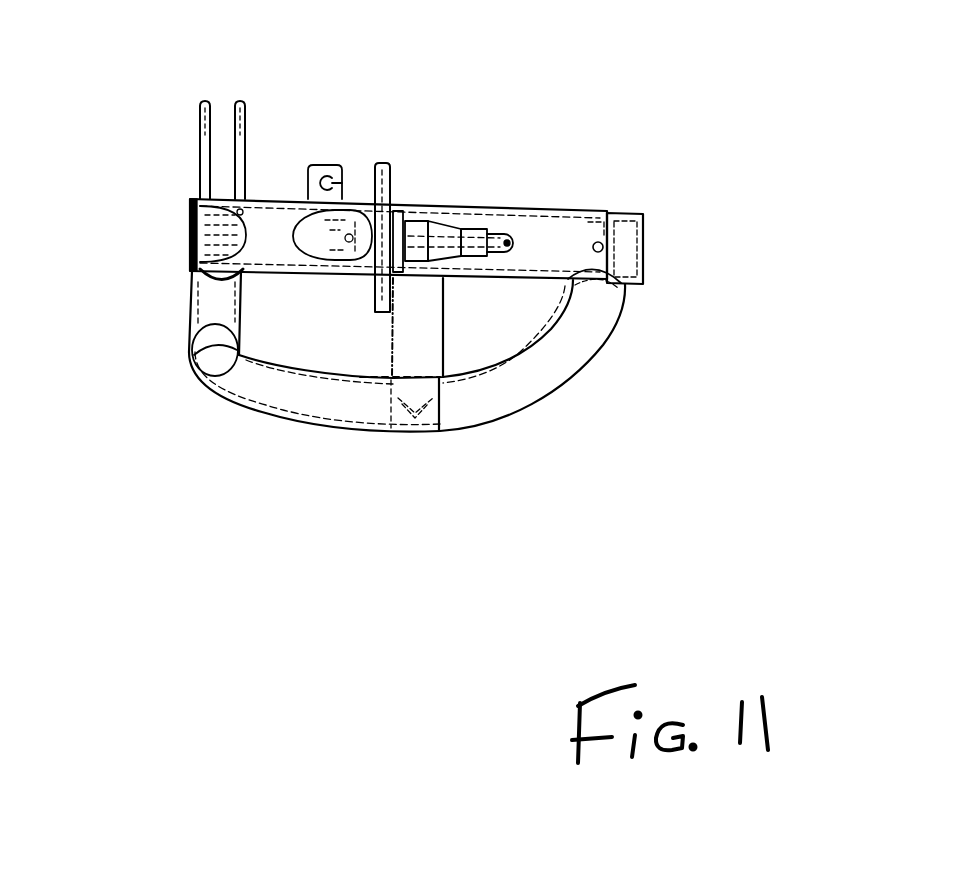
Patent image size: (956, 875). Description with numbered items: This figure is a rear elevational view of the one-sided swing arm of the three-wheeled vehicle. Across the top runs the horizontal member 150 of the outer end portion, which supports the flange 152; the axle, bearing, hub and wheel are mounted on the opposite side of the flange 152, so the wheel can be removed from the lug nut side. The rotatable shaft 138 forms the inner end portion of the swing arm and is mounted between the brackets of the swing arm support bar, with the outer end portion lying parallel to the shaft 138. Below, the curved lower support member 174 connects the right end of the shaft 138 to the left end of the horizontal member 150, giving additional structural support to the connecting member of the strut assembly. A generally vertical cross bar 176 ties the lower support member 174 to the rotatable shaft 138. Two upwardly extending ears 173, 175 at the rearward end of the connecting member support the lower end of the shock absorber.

The rotatable shaft 138 is at (560, 228).
The horizontal member 150 is at (266, 226).
The flange 152 is at (391, 180).
The upwardly extending ear 173 is at (200, 138).
The curved lower support member 174 is at (496, 402).
The upwardly extending ear 175 is at (246, 127).
The vertical cross bar 176 is at (424, 311).